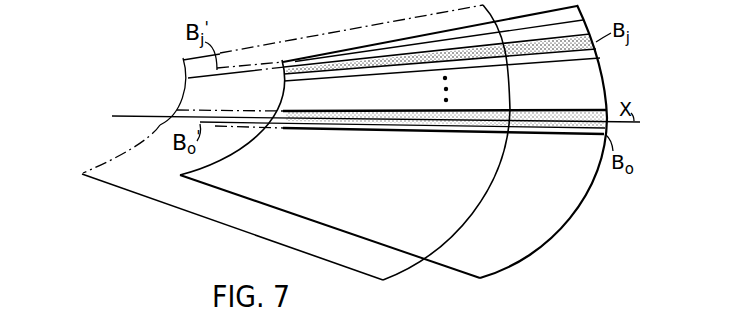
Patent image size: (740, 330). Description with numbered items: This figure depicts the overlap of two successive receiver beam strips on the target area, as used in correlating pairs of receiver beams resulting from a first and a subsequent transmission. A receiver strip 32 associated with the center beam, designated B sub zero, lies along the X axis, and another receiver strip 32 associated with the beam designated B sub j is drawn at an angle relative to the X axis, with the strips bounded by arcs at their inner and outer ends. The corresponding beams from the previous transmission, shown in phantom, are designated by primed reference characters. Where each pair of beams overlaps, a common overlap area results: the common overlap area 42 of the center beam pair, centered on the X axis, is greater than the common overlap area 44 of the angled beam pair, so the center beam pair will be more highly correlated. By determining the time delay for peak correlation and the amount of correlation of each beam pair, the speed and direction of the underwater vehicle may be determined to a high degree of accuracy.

The receiver strip 32 is at (533, 54).
The common overlap area 42 is at (415, 123).
The common overlap area 44 is at (383, 67).